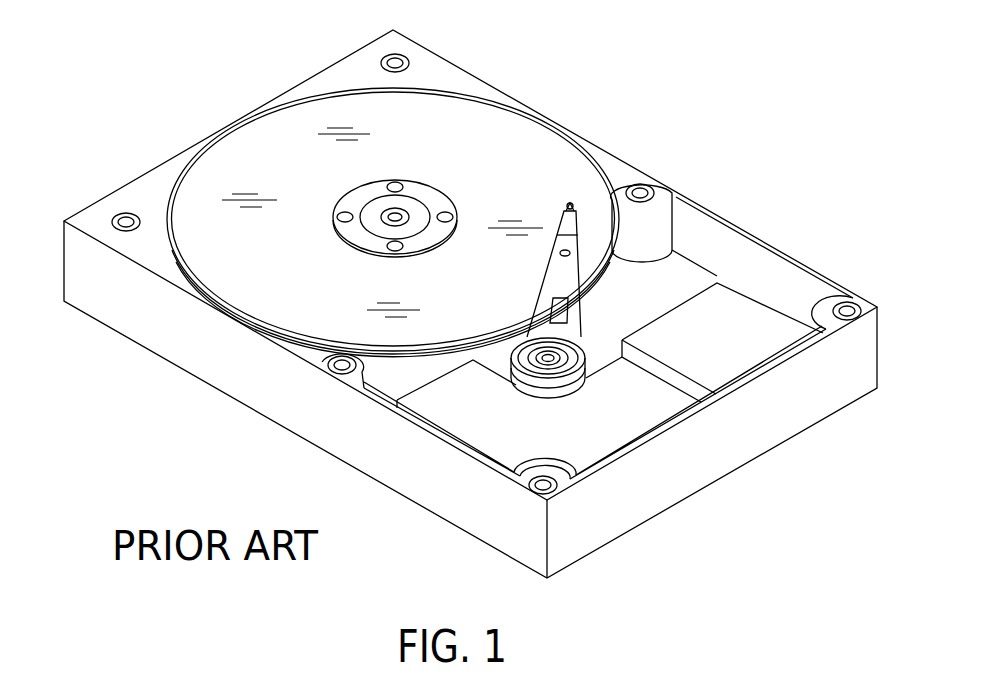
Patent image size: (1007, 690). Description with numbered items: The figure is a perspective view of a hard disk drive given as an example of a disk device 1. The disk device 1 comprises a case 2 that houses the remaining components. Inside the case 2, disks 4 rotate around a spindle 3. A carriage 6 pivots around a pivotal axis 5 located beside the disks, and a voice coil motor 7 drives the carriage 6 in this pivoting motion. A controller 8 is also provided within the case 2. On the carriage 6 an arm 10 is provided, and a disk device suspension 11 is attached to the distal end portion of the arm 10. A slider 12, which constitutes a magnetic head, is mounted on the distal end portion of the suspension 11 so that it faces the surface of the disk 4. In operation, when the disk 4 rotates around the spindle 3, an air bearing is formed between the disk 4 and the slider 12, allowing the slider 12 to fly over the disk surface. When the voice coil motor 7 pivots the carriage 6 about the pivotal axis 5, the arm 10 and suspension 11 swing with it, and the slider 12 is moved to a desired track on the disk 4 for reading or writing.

The disk device 1 is at (470, 304).
The case 2 is at (238, 384).
The spindle 3 is at (416, 212).
The disk 4 is at (508, 133).
The pivotal axis 5 is at (563, 362).
The carriage 6 is at (580, 328).
The voice coil motor 7 is at (482, 437).
The controller 8 is at (740, 367).
The arm 10 is at (557, 279).
The disk device suspension 11 is at (568, 208).
The slider 12 is at (572, 204).